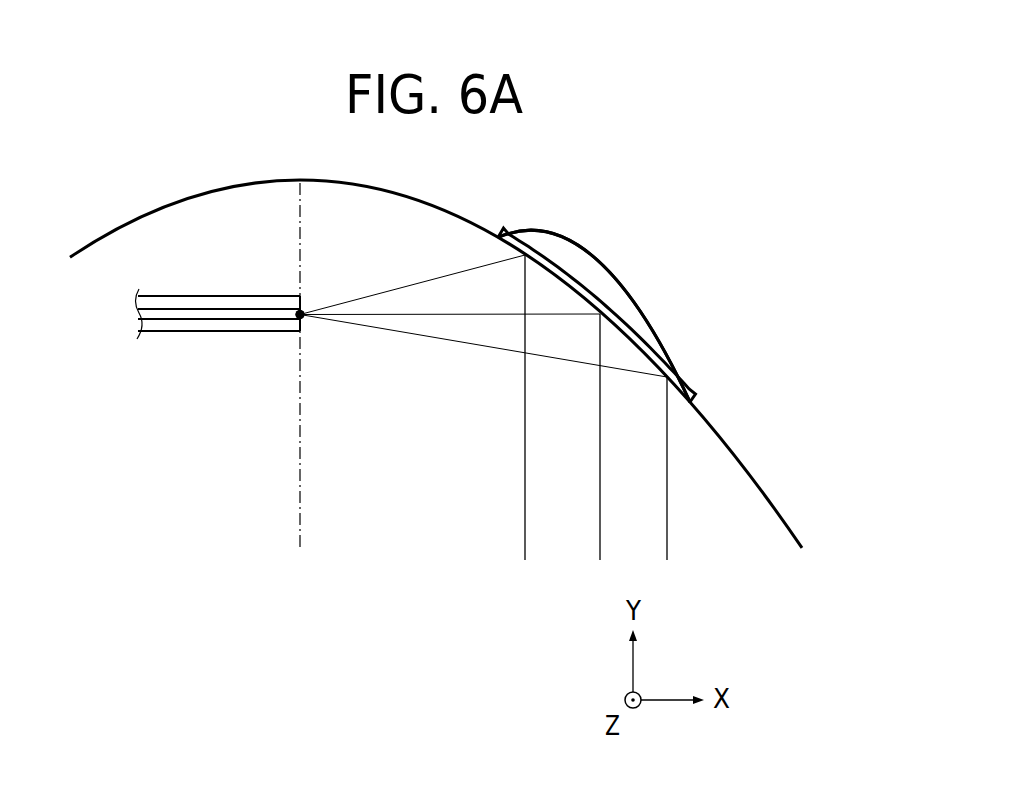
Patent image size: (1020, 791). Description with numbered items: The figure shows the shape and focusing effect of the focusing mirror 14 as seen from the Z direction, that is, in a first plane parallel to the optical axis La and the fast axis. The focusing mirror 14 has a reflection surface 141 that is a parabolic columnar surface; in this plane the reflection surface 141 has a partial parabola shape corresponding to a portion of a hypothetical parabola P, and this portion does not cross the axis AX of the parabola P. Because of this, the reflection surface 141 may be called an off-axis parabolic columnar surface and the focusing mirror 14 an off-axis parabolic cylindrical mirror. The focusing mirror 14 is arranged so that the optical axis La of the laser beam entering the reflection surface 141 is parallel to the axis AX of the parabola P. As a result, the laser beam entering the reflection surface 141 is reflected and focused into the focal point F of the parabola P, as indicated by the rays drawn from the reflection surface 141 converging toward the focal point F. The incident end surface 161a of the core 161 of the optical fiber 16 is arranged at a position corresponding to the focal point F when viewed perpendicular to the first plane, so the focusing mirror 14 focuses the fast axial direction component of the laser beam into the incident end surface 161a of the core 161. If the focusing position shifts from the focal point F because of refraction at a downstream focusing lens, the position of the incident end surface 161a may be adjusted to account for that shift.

The parabola P is at (158, 207).
The axis of the parabola AX is at (300, 450).
The optical fiber 16 is at (195, 296).
The core 161 is at (196, 314).
The incident end surface 161a is at (302, 311).
The focal point F is at (303, 318).
The optical axis La is at (525, 512).
The focusing mirror 14 is at (583, 283).
The reflection surface 141 is at (565, 271).